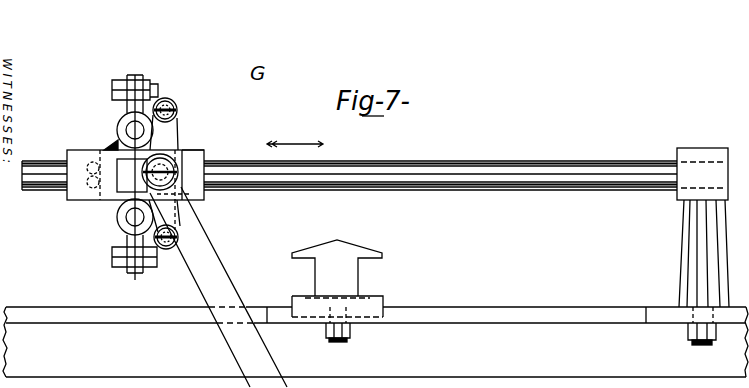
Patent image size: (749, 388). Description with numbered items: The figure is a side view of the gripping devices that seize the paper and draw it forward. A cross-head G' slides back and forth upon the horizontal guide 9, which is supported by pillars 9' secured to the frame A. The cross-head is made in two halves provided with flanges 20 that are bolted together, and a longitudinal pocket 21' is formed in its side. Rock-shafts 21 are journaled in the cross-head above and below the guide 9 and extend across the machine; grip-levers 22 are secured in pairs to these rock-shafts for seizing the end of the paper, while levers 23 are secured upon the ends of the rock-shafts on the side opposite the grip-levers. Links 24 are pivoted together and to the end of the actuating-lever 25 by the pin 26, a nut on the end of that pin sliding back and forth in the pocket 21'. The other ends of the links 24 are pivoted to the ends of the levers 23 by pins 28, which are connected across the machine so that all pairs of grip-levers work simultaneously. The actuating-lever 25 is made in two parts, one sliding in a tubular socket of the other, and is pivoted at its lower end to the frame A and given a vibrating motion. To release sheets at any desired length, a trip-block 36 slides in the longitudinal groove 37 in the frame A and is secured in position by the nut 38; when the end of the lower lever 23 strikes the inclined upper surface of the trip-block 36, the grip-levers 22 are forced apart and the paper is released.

The horizontal guide 9 is at (349, 166).
The pillar 9' is at (690, 227).
The flange 20 is at (136, 76).
The rock-shaft 21 is at (118, 183).
The longitudinal pocket 21' is at (108, 202).
The grip-lever 22 is at (110, 138).
The lever 23 is at (122, 122).
The link 24 is at (172, 133).
The actuating-lever 25 is at (218, 287).
The pin 26 is at (179, 173).
The pin 28 is at (171, 106).
The trip-block 36 is at (337, 278).
The longitudinal groove 37 is at (447, 313).
The nut 38 is at (330, 343).
The frame A is at (375, 342).
The cross-head G' is at (201, 143).